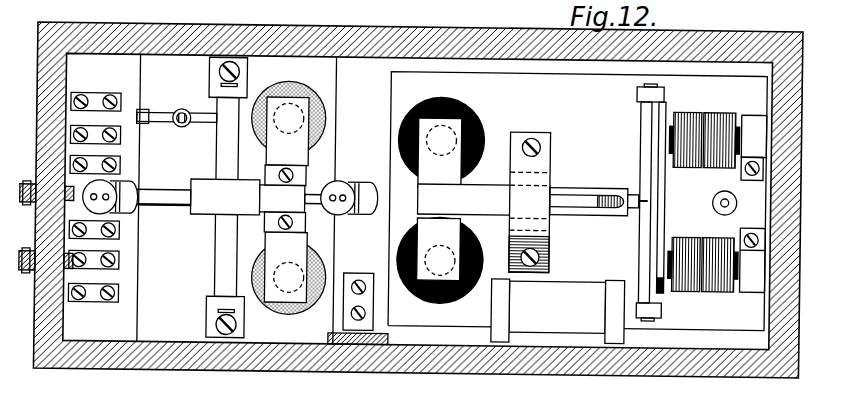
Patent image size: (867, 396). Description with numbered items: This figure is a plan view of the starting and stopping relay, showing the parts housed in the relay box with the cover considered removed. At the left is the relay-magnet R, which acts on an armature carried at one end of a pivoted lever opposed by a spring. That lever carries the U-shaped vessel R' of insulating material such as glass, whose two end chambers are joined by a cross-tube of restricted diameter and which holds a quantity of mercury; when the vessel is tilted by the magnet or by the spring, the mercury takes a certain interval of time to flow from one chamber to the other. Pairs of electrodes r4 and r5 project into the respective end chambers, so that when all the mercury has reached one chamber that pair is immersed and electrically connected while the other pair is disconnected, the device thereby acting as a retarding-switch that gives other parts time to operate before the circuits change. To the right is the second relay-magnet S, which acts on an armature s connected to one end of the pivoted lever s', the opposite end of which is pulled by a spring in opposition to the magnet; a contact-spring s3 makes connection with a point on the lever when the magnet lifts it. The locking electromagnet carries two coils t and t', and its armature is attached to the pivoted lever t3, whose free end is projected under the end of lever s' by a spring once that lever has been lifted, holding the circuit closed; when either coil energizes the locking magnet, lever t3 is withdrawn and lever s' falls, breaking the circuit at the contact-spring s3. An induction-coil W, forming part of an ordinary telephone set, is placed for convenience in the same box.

The relay-magnet R is at (288, 211).
The U-shaped vessel R' is at (219, 223).
The electrodes r4 is at (338, 212).
The electrodes r5 is at (107, 194).
The relay-magnet S is at (449, 141).
The armature s is at (439, 260).
The pivoted lever s' is at (484, 200).
The contact-spring s3 is at (591, 198).
The pivoted lever t3 is at (643, 197).
The coil t is at (685, 201).
The coil t' is at (717, 203).
The induction-coil W is at (558, 311).